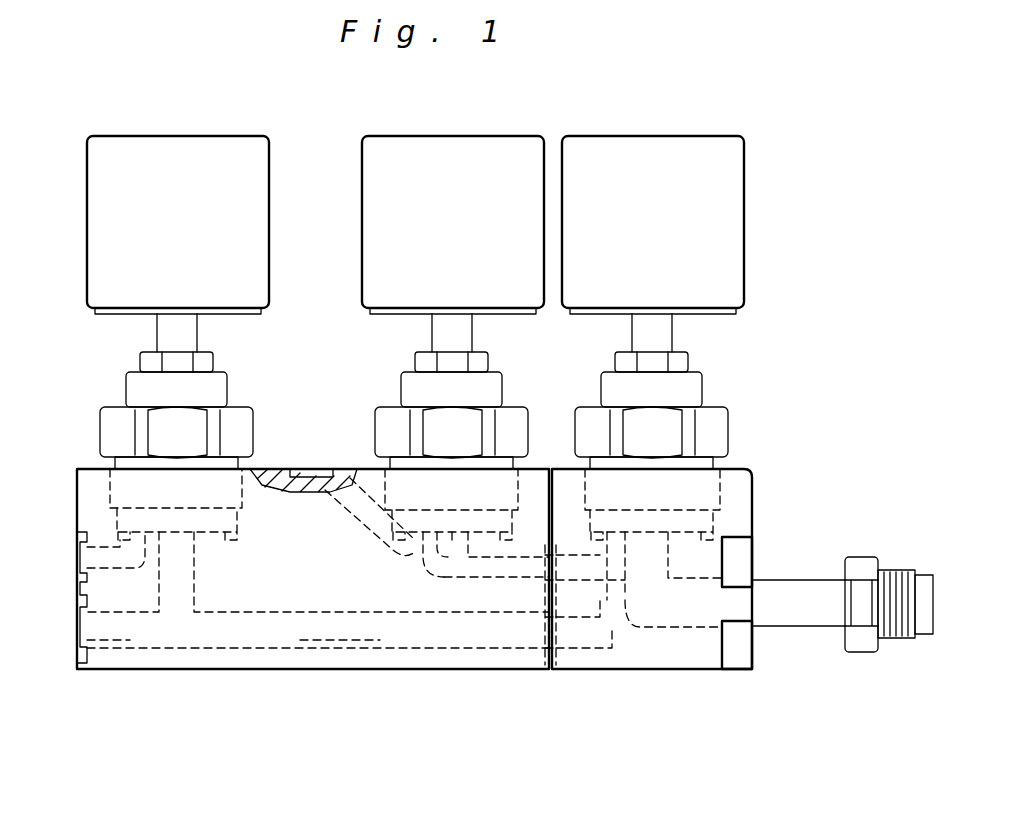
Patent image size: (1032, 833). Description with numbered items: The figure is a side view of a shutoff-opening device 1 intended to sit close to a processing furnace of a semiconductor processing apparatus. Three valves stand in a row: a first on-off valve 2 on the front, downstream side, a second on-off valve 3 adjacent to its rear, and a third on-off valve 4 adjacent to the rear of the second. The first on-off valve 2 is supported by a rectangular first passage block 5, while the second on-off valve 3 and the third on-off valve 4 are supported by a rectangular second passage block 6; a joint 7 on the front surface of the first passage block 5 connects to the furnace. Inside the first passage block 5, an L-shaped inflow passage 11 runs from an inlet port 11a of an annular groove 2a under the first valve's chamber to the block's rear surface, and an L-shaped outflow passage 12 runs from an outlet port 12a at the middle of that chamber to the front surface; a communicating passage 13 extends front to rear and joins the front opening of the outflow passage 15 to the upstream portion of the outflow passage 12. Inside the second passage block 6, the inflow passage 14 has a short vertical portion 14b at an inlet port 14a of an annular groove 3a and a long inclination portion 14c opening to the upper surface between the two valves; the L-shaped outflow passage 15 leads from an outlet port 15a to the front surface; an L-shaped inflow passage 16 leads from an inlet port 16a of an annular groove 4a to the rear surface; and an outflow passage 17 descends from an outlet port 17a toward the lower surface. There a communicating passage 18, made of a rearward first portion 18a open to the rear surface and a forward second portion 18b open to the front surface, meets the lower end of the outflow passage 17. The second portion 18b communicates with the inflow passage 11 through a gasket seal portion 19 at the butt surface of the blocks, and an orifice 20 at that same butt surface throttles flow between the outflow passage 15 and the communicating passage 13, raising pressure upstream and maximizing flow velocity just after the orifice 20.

The shutoff-opening device 1 is at (835, 343).
The first on-off valve 2 is at (710, 137).
The second on-off valve 3 is at (503, 137).
The third on-off valve 4 is at (236, 136).
The first passage block 5 is at (658, 669).
The second passage block 6 is at (287, 669).
The joint 7 is at (862, 557).
The first on-off valve-corresponding inflow passage 11 is at (584, 632).
The inlet port 11a is at (605, 533).
The first on-off valve-corresponding outflow passage 12 is at (692, 603).
The outlet port 12a is at (697, 538).
The communicating passage 13 is at (608, 628).
The second on-off valve-corresponding inflow passage 14 is at (375, 548).
The inlet port 14a is at (400, 533).
The vertical portion 14b is at (433, 540).
The inclination portion 14c is at (372, 505).
The second on-off valve-corresponding outflow passage 15 is at (487, 570).
The outlet port 15a is at (455, 533).
The third on-off valve-corresponding inflow passage 16 is at (98, 545).
The inlet port 16a is at (103, 548).
The third on-off valve-corresponding outflow passage 17 is at (180, 615).
The outlet port 17a is at (195, 530).
The first on-off valve-corresponding communicating passage 18 is at (236, 632).
The first portion 18a is at (105, 632).
The second portion 18b is at (336, 632).
The seal portion 19 is at (547, 665).
The orifice 20 is at (565, 555).
The annular groove 2a is at (725, 528).
The annular groove 3a is at (495, 535).
The annular groove 4a is at (222, 530).